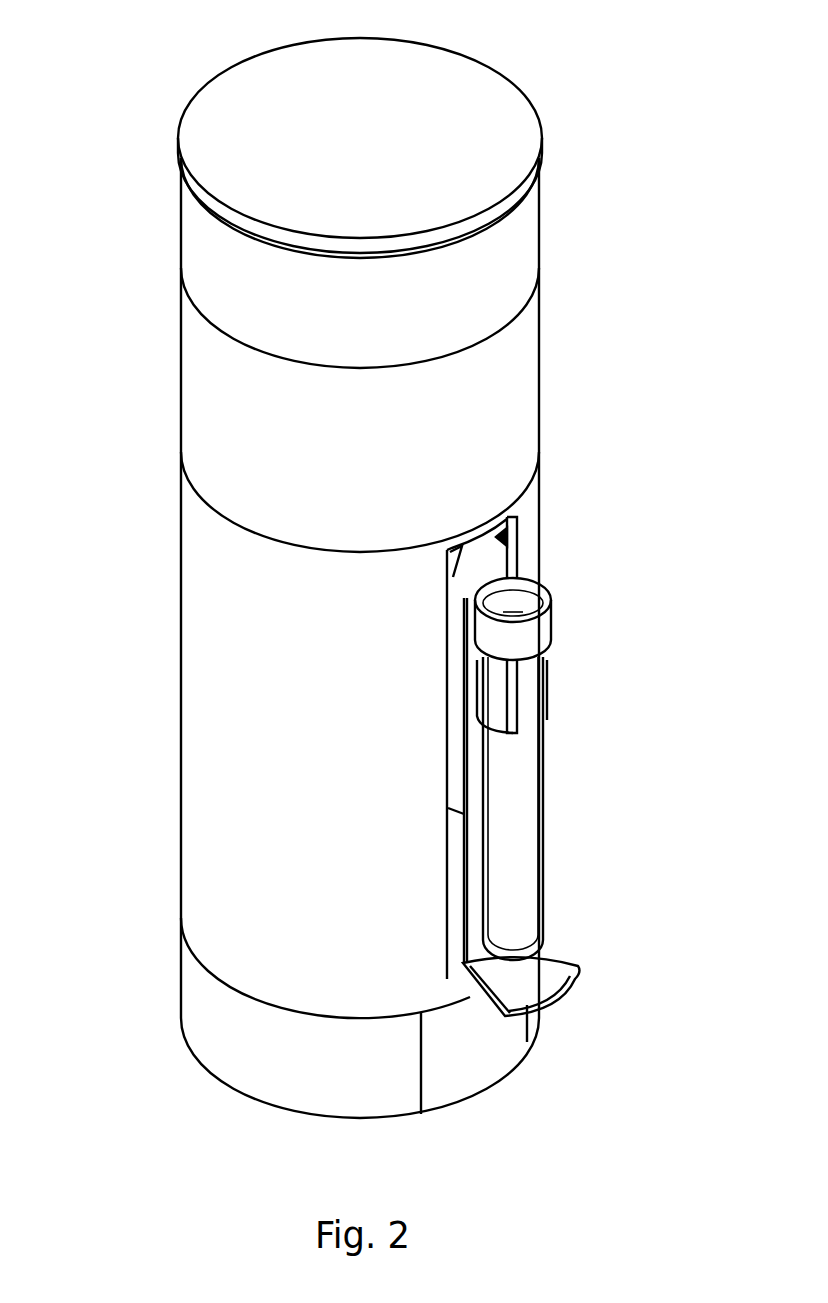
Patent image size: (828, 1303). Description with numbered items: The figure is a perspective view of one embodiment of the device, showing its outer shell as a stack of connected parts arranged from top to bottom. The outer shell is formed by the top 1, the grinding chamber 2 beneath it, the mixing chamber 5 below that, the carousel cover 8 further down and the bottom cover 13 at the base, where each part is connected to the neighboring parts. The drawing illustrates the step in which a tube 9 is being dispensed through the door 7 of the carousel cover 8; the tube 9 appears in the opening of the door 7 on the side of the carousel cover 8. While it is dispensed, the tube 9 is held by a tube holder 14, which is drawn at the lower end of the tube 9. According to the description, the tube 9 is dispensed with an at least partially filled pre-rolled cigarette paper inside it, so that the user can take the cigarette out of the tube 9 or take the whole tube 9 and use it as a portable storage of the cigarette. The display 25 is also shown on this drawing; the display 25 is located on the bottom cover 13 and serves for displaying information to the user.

The top 1 is at (438, 137).
The grinding chamber 2 is at (498, 266).
The mixing chamber 5 is at (497, 408).
The door 7 is at (517, 540).
The carousel cover 8 is at (235, 645).
The tube 9 is at (520, 823).
The bottom cover 13 is at (220, 1035).
The tube holder 14 is at (522, 965).
The display 25 is at (497, 1050).